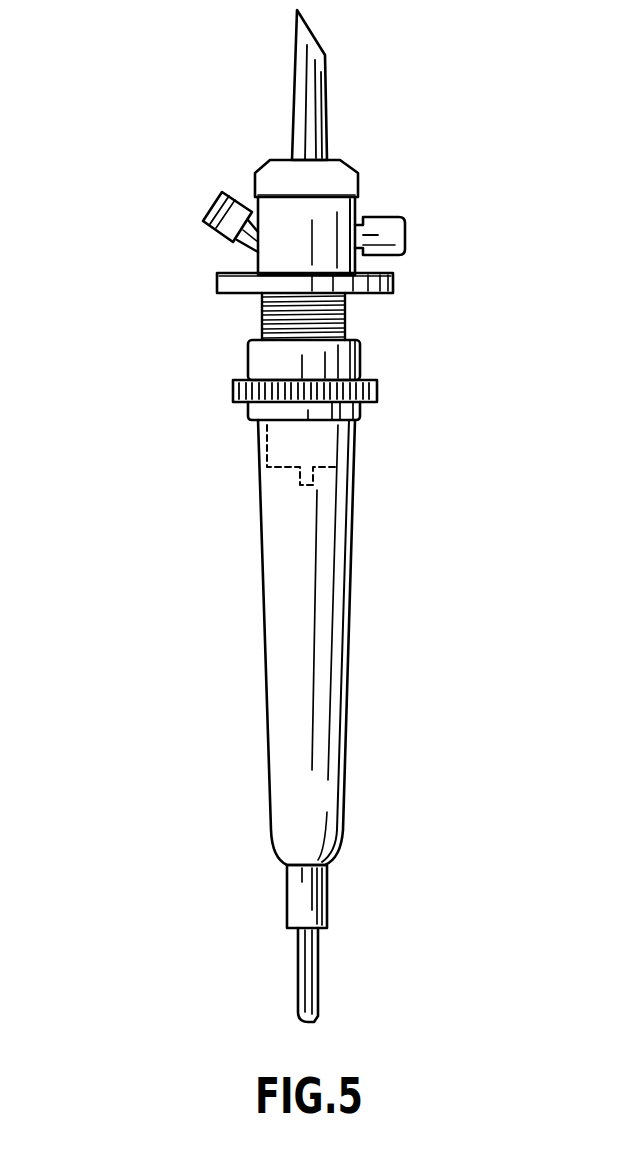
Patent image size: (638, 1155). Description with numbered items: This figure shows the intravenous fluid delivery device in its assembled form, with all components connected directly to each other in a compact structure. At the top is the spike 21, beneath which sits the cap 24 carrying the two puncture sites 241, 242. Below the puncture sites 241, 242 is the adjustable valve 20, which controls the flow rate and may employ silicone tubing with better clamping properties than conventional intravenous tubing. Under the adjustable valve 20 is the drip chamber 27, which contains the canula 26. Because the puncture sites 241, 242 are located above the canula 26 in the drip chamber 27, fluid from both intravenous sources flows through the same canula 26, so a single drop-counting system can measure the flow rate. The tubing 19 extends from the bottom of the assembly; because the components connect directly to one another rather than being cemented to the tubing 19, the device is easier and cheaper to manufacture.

The tubing 19 is at (320, 975).
The adjustable valve 20 is at (432, 308).
The spike 21 is at (325, 98).
The cap 24 is at (357, 208).
The puncture site 241 is at (405, 235).
The puncture site 242 is at (210, 197).
The canula 26 is at (360, 483).
The drip chamber 27 is at (347, 703).